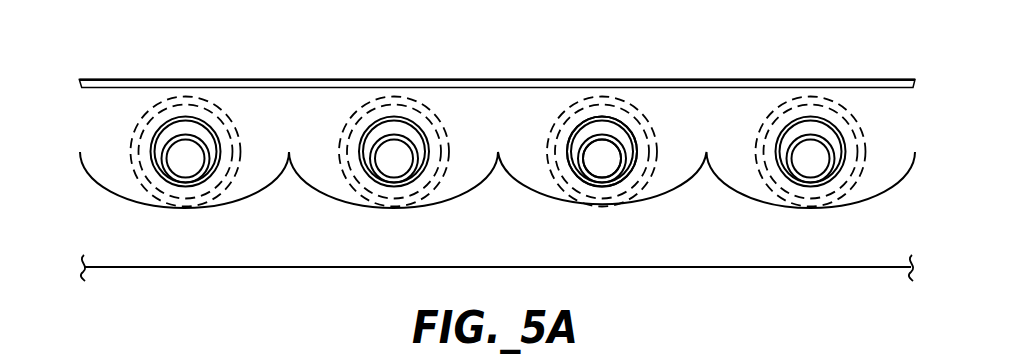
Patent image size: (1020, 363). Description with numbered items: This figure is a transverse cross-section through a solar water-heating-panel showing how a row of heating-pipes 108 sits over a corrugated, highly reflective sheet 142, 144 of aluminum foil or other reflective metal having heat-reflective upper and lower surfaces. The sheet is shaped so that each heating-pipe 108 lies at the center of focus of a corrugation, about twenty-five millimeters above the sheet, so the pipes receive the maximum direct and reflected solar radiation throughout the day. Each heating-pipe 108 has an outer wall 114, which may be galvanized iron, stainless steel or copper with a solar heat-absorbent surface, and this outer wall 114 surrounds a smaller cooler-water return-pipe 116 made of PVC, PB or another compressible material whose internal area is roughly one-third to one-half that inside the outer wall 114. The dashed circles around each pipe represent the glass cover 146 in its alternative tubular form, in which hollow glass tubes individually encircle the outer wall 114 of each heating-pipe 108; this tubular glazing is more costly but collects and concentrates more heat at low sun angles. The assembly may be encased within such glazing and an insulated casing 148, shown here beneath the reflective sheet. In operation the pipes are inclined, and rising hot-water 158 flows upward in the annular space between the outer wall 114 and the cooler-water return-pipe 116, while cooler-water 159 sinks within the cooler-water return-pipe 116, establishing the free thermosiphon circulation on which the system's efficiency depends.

The heating-pipe 108 is at (412, 118).
The outer wall 114 is at (186, 113).
The cooler-water return-pipe 116 is at (417, 163).
The reflective sheet 142 is at (497, 112).
The reflector wall 144 is at (507, 170).
The glass cover 146 is at (760, 79).
The insulated casing 148 is at (622, 268).
The rising hot-water 158 is at (613, 130).
The cooler-water 159 is at (605, 167).